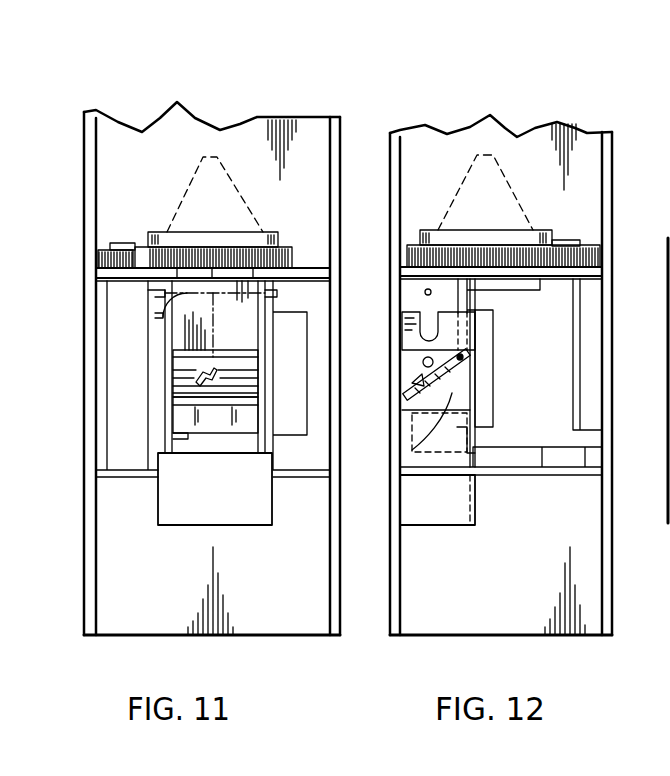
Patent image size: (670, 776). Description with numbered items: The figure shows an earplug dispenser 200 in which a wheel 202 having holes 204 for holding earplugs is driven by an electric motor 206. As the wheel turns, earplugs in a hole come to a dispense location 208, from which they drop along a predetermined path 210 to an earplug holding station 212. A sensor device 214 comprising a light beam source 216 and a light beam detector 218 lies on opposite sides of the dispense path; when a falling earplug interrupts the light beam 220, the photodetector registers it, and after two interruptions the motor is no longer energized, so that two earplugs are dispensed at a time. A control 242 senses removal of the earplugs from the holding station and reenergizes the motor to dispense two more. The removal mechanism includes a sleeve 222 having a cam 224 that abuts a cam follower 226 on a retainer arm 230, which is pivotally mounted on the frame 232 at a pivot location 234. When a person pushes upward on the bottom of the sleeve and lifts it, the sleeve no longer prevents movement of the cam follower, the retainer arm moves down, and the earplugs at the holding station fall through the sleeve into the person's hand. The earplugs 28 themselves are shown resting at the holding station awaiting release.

In FIG. 11, the earplug dispenser 200 is at (160, 100).
In FIG. 11, the wheel 202 is at (160, 247).
In FIG. 11, the holes 204 is at (217, 262).
In FIG. 11, the dispense location 208 is at (213, 262).
In FIG. 11, the light beam detector 218 is at (297, 275).
In FIG. 11, the light beam source 216 is at (155, 293).
In FIG. 11, the light beam 220 is at (165, 313).
In FIG. 11, the electric motor 206 is at (107, 362).
In FIG. 11, the predetermined path 210 is at (213, 328).
In FIG. 11, the earplug holding station 212 is at (173, 373).
In FIG. 12, the earplug holding station 212 is at (407, 388).
In FIG. 11, the sensor device 214 is at (283, 297).
In FIG. 11, the sleeve 222 is at (158, 511).
In FIG. 12, the sleeve 222 is at (477, 500).
In FIG. 12, the frame 232 is at (608, 168).
In FIG. 12, the pivot location 234 is at (465, 357).
In FIG. 12, the pin 28 is at (414, 372).
In FIG. 12, the cam 224 is at (477, 395).
In FIG. 12, the control 242 is at (590, 434).
In FIG. 12, the retainer arm 230 is at (437, 412).
In FIG. 12, the cam follower 226 is at (412, 450).